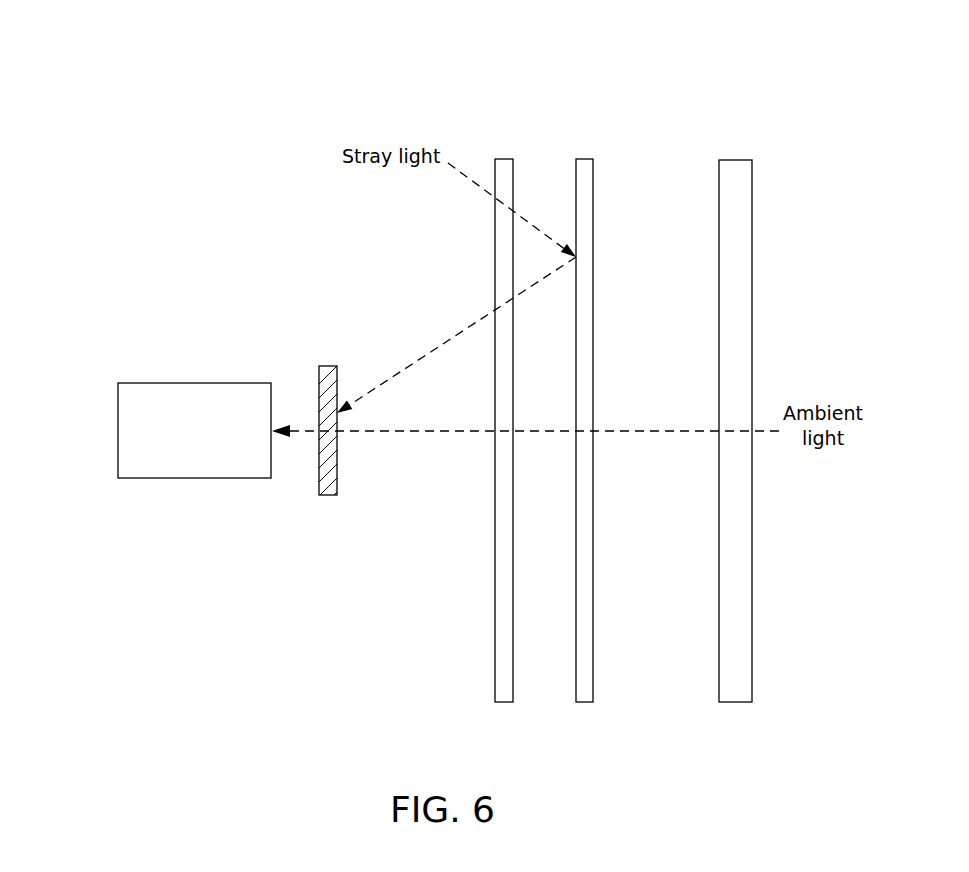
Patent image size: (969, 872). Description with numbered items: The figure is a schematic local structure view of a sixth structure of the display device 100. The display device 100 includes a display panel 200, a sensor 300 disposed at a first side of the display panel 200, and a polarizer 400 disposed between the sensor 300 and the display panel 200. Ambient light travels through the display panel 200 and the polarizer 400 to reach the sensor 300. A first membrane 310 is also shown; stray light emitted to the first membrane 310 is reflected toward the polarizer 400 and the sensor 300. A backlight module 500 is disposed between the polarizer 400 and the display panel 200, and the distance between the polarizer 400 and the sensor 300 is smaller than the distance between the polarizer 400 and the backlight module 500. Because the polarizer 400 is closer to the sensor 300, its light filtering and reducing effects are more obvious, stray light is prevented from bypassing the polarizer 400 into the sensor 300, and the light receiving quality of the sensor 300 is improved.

The display device 100 is at (108, 46).
The display panel 200 is at (719, 175).
The first membrane 310 is at (576, 182).
The sensor 300 is at (170, 478).
The polarizer 400 is at (330, 495).
The backlight module 500 is at (495, 695).